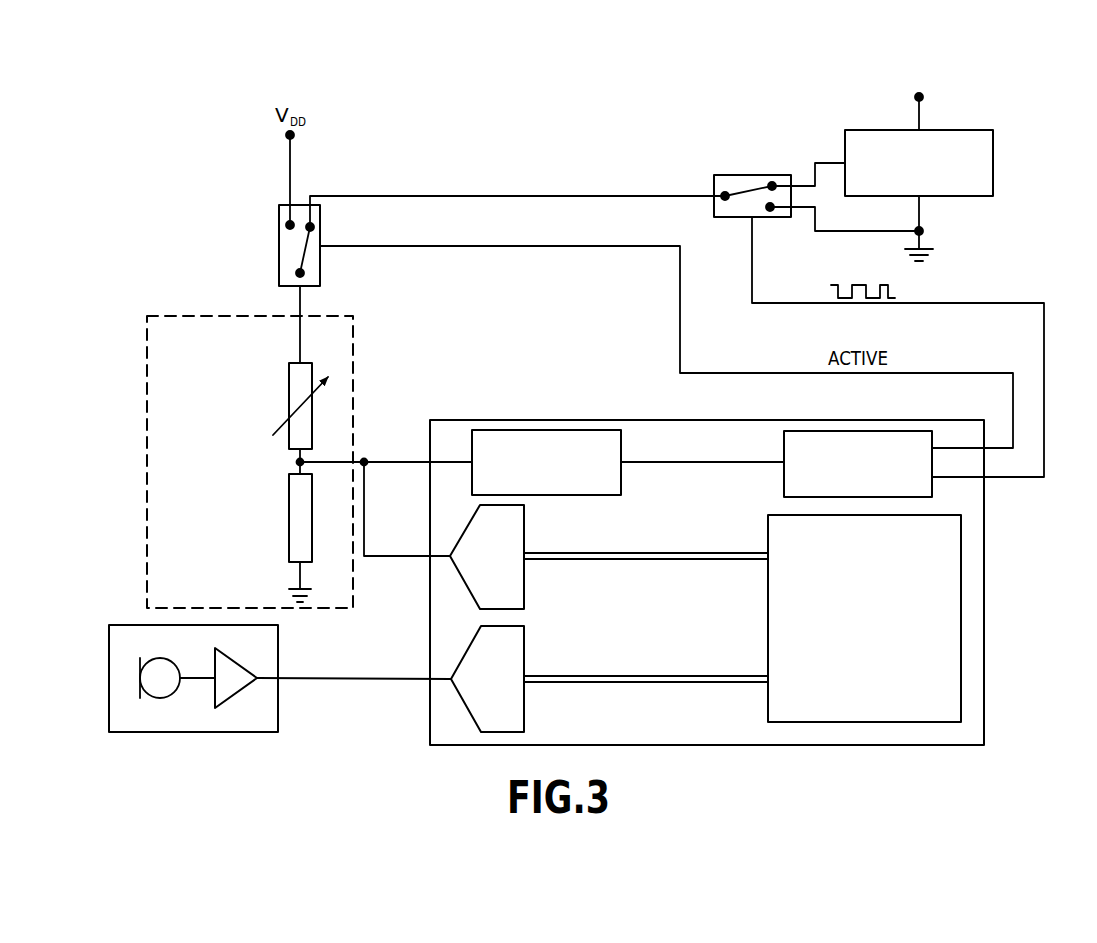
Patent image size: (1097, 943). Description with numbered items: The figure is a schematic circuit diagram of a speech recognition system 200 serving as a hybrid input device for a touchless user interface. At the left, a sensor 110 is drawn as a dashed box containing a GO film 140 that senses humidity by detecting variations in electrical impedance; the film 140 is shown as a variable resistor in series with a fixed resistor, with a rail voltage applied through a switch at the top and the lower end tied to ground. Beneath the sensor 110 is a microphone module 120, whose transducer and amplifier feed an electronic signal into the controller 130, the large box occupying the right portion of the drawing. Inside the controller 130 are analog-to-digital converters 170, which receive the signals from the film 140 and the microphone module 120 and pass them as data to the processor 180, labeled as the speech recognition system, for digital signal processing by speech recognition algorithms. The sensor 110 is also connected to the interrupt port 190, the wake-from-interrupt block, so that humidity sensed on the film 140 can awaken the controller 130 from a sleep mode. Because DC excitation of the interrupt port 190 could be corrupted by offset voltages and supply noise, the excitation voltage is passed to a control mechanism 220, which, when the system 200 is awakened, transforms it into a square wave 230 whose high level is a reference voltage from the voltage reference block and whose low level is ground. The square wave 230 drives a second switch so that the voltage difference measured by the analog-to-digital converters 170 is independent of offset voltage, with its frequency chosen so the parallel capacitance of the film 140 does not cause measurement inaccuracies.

The system 200 is at (1000, 50).
The sensor 110 is at (362, 357).
The film 140 is at (288, 443).
The controller 130 is at (478, 412).
The interrupt port 190 is at (582, 495).
The analog-to-digital converters 170 is at (524, 642).
The processor 180 is at (768, 607).
The control mechanism 220 is at (782, 478).
The square wave 230 is at (991, 303).
The microphone module 120 is at (128, 742).